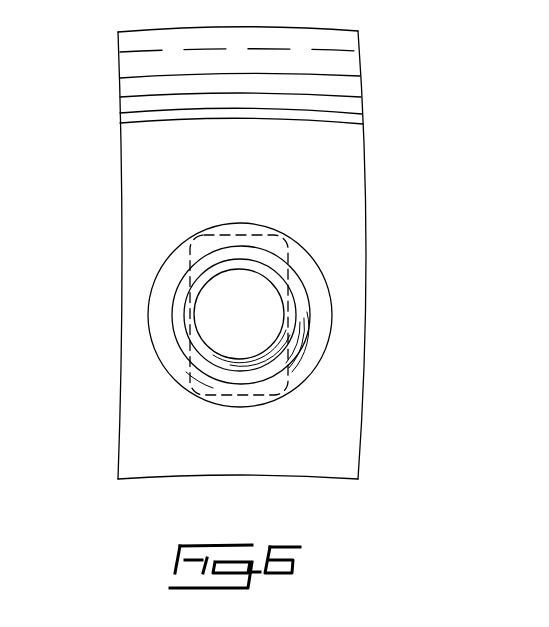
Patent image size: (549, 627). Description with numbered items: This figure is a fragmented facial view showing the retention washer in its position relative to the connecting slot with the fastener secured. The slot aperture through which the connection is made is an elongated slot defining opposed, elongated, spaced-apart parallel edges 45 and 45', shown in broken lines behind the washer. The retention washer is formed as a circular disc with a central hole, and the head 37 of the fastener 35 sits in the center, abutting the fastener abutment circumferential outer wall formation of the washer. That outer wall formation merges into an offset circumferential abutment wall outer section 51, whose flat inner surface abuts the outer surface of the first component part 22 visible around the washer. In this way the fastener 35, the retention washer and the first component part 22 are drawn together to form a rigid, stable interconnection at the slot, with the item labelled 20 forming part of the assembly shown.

The tubular body 20 is at (312, 100).
The first component part 22 is at (335, 422).
The fastener 35 is at (260, 301).
The head 37 is at (270, 336).
The parallel edge 45 is at (311, 315).
The parallel edge 45' is at (184, 315).
The offset circumferential abutment wall outer section 51 is at (316, 333).